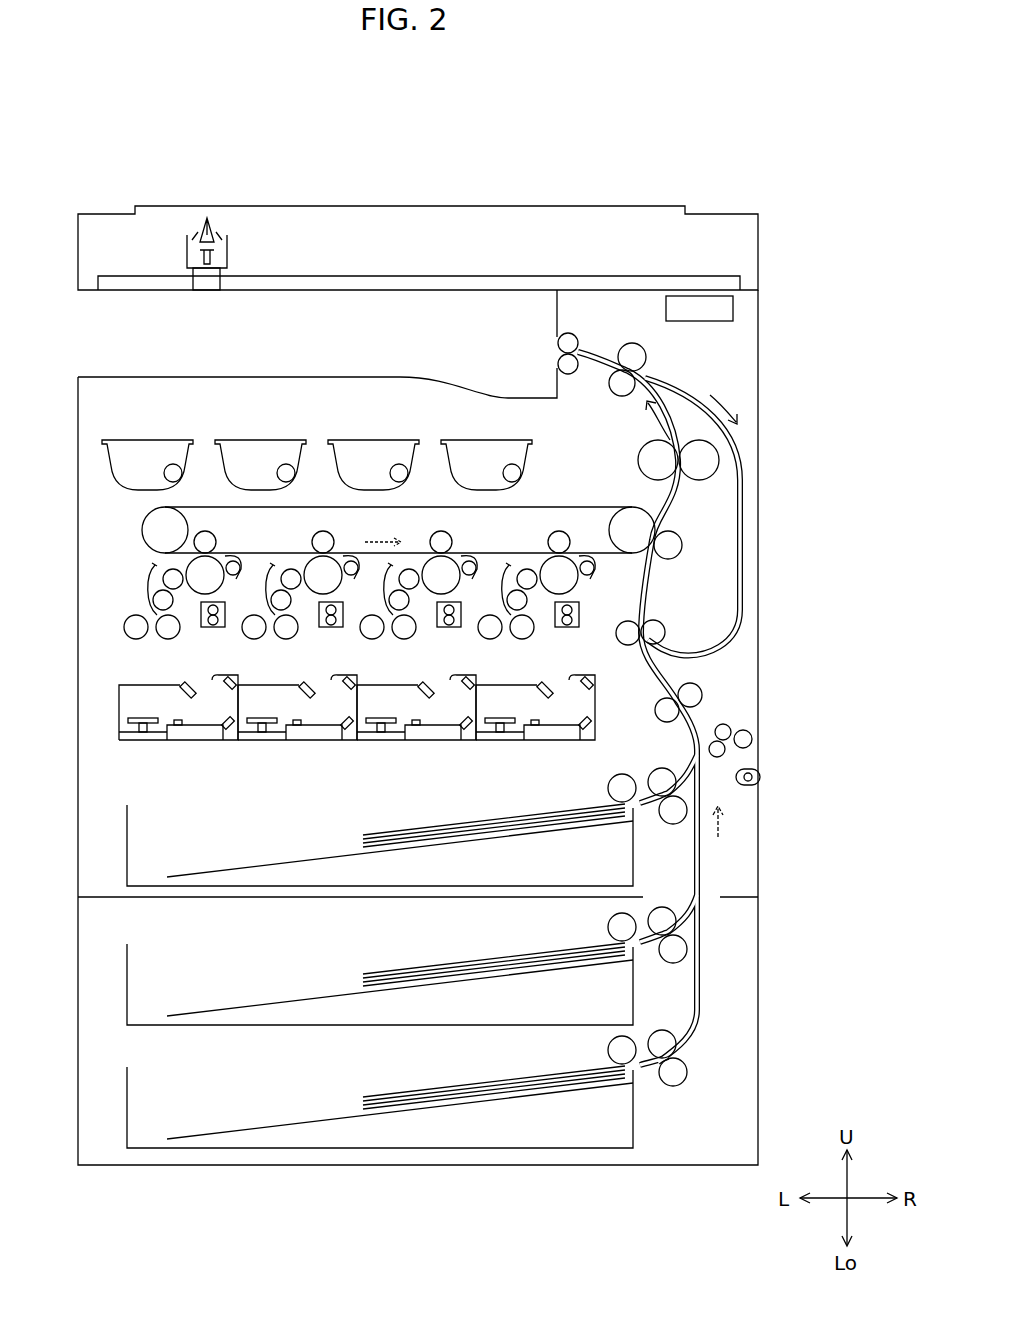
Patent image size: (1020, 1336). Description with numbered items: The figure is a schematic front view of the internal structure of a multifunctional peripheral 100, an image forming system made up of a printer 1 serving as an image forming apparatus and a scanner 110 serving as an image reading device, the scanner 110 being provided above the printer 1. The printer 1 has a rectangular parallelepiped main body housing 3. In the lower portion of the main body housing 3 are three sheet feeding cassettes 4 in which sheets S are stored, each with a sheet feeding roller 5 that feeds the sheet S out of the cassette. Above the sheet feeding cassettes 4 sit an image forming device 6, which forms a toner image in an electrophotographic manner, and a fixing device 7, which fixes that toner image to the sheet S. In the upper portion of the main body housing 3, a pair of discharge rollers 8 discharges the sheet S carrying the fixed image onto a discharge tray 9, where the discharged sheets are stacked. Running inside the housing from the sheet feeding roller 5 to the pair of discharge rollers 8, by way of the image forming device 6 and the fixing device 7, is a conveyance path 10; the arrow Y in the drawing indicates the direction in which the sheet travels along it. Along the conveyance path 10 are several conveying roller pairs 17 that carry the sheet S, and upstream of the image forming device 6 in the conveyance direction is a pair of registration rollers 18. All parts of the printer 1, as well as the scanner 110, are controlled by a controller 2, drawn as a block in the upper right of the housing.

The multifunctional peripheral 100 is at (447, 138).
The scanner 110 is at (775, 238).
The printer 1 is at (776, 335).
The controller 2 is at (710, 321).
The main body housing 3 is at (78, 403).
The sheet feeding cassette 4 is at (633, 862).
The sheet feeding roller 5 is at (608, 790).
The image forming device 6 is at (112, 507).
The fixing device 7 is at (700, 490).
The pair of discharge rollers 8 is at (580, 343).
The discharge tray 9 is at (268, 375).
The conveyance path 10 is at (710, 948).
The conveying roller pairs 17 is at (645, 358).
The pair of registration rollers 18 is at (662, 625).
The sheet S is at (375, 835).
The conveyance direction Y is at (726, 821).